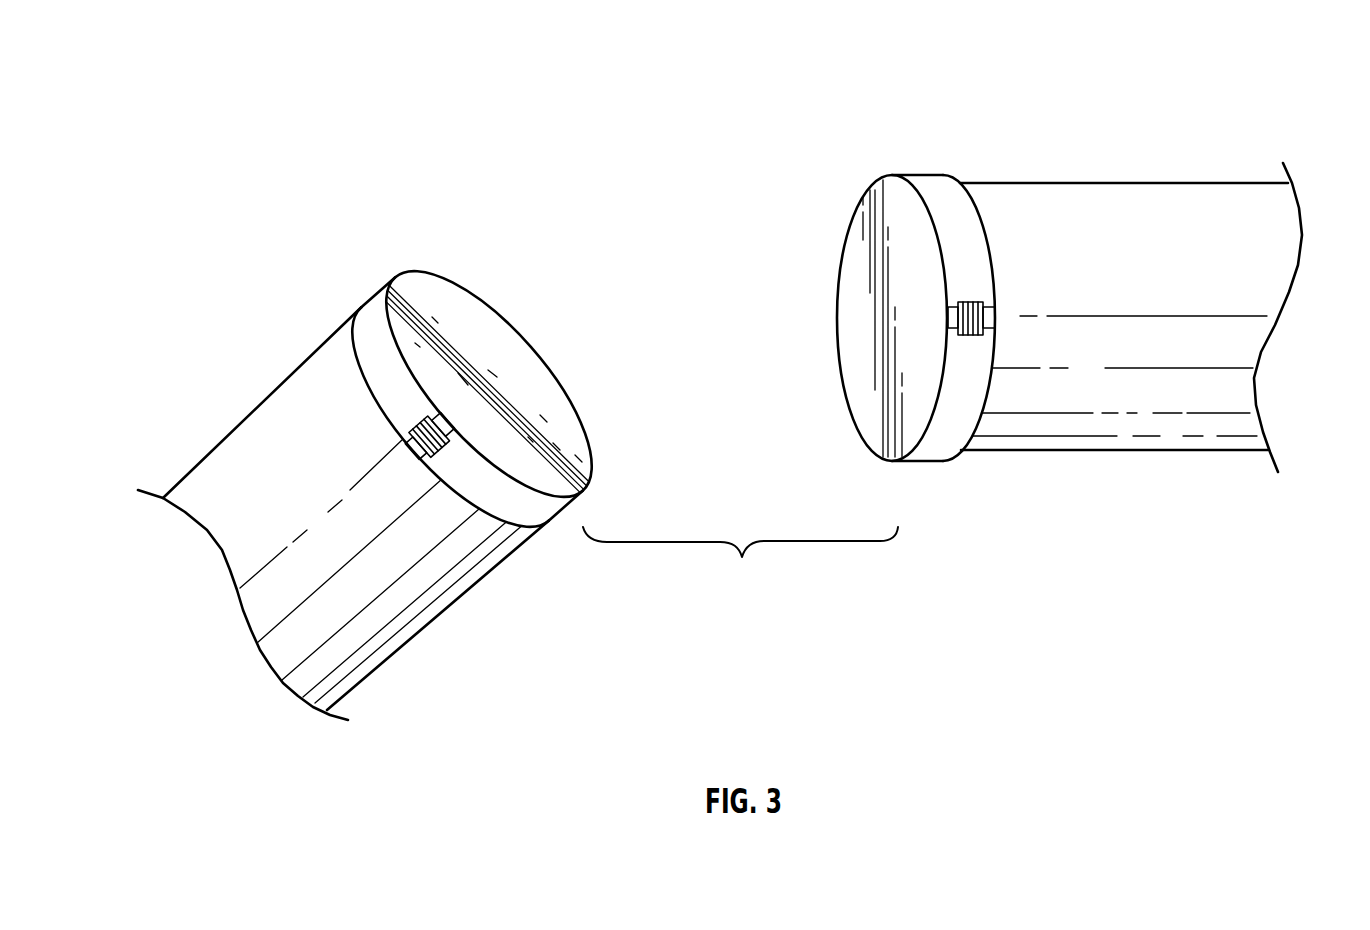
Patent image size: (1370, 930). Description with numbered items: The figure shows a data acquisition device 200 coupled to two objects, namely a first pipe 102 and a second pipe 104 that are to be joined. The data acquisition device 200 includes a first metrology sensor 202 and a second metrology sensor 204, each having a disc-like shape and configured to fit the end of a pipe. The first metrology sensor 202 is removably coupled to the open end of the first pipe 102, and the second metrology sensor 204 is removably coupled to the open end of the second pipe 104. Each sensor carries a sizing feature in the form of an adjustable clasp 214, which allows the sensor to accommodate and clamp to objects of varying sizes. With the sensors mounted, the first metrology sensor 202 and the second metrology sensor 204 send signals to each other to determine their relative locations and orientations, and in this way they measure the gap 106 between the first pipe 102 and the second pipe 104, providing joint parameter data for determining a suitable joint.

The first pipe 102 is at (249, 396).
The second pipe 104 is at (1138, 159).
The gap 106 is at (740, 559).
The data acquisition device 200 is at (670, 274).
The first metrology sensor 202 is at (462, 297).
The second metrology sensor 204 is at (933, 184).
The adjustable clasp 214 is at (421, 428).